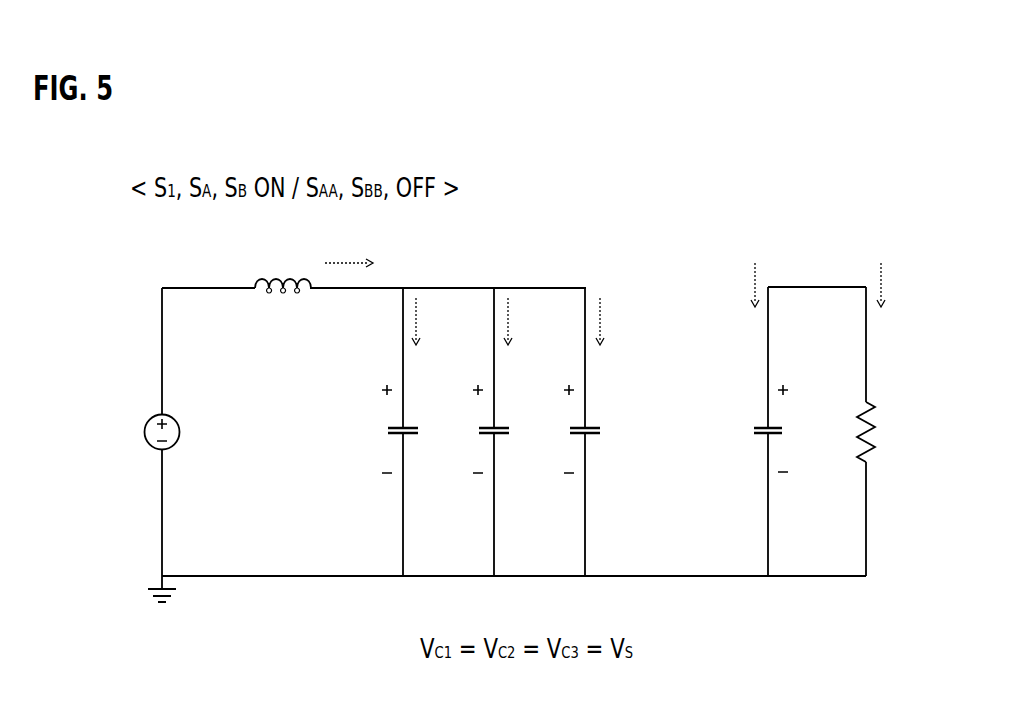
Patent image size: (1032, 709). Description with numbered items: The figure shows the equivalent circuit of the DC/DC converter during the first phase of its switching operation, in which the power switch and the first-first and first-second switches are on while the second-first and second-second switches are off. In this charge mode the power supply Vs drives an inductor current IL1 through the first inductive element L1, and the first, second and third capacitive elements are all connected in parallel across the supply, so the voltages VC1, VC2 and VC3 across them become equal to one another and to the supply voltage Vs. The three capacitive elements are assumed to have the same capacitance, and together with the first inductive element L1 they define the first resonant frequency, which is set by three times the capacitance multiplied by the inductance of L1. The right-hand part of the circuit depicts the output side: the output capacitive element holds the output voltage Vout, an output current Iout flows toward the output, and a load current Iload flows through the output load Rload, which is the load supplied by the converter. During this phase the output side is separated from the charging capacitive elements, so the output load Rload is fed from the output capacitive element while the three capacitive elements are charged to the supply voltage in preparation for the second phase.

The power supply Vs is at (150, 432).
The first inductive element L1 is at (283, 272).
The inductor current IL1 is at (349, 254).
The first capacitive element voltage VC1 is at (386, 385).
The second capacitive element voltage VC2 is at (478, 385).
The third capacitive element voltage VC3 is at (569, 385).
The output voltage Vout is at (792, 428).
The output current Iout is at (739, 283).
The output load Rload is at (893, 432).
The load current Iload is at (902, 283).